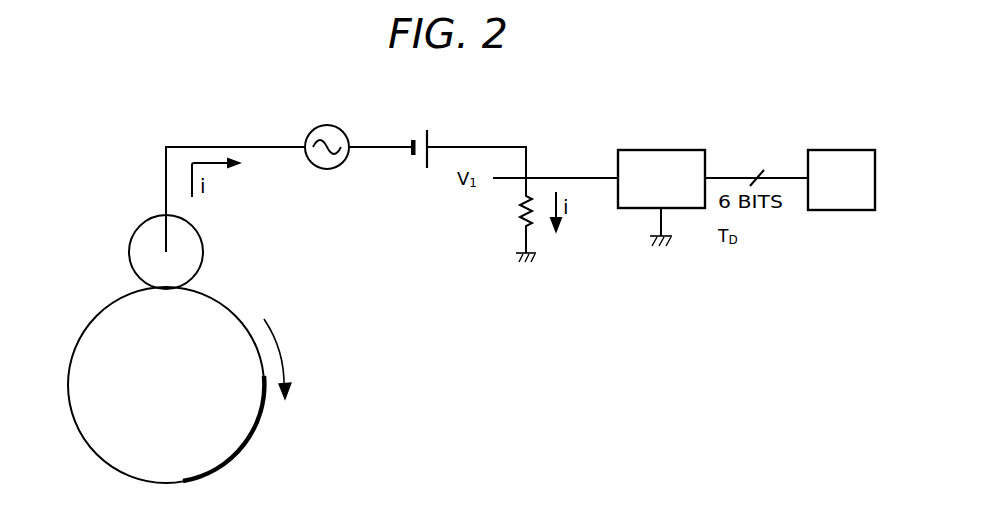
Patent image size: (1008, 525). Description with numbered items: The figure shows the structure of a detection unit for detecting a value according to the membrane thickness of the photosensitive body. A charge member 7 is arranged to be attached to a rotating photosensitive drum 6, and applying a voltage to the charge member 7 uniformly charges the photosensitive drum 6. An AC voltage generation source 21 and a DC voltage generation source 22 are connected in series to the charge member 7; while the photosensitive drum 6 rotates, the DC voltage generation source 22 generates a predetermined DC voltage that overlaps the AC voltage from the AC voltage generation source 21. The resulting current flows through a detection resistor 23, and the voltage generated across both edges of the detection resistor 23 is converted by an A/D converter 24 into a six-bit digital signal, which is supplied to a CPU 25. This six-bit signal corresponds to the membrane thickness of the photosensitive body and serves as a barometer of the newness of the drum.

The photosensitive drum 6 is at (258, 425).
The charge member 7 is at (140, 222).
The AC voltage generation source 21 is at (307, 137).
The DC voltage generation source 22 is at (424, 137).
The detection resistor 23 is at (517, 218).
The A/D converter 24 is at (676, 150).
The CPU 25 is at (855, 150).